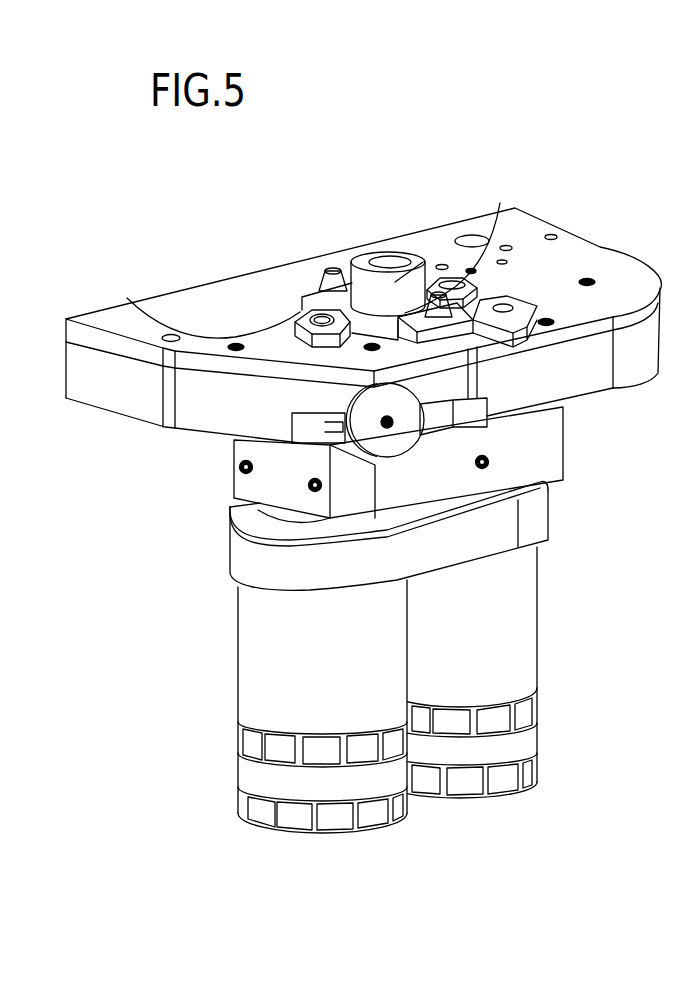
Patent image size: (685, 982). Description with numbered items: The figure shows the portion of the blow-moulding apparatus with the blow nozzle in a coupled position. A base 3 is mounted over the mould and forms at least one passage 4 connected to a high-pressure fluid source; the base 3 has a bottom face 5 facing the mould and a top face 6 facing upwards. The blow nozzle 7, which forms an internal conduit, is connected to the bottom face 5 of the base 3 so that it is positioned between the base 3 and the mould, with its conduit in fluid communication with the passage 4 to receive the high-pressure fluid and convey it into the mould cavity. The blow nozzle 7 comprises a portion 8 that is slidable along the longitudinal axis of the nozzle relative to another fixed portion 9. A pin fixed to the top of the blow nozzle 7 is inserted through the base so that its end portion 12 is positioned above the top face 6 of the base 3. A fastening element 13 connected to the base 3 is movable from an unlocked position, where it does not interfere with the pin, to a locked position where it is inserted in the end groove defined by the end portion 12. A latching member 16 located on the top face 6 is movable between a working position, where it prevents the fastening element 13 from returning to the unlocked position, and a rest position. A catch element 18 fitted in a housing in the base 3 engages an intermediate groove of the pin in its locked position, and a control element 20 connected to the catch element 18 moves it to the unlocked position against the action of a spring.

The base 3 is at (133, 400).
The passage 4 is at (161, 335).
The bottom face 5 is at (92, 408).
The top face 6 is at (246, 300).
The blow nozzle 7 is at (260, 680).
The slidable portion 8 is at (510, 652).
The fixed portion 9 is at (535, 487).
The end portion 12 is at (331, 272).
The fastening element 13 is at (413, 255).
The latching member 16 is at (525, 290).
The catch element 18 is at (463, 412).
The control element 20 is at (378, 440).